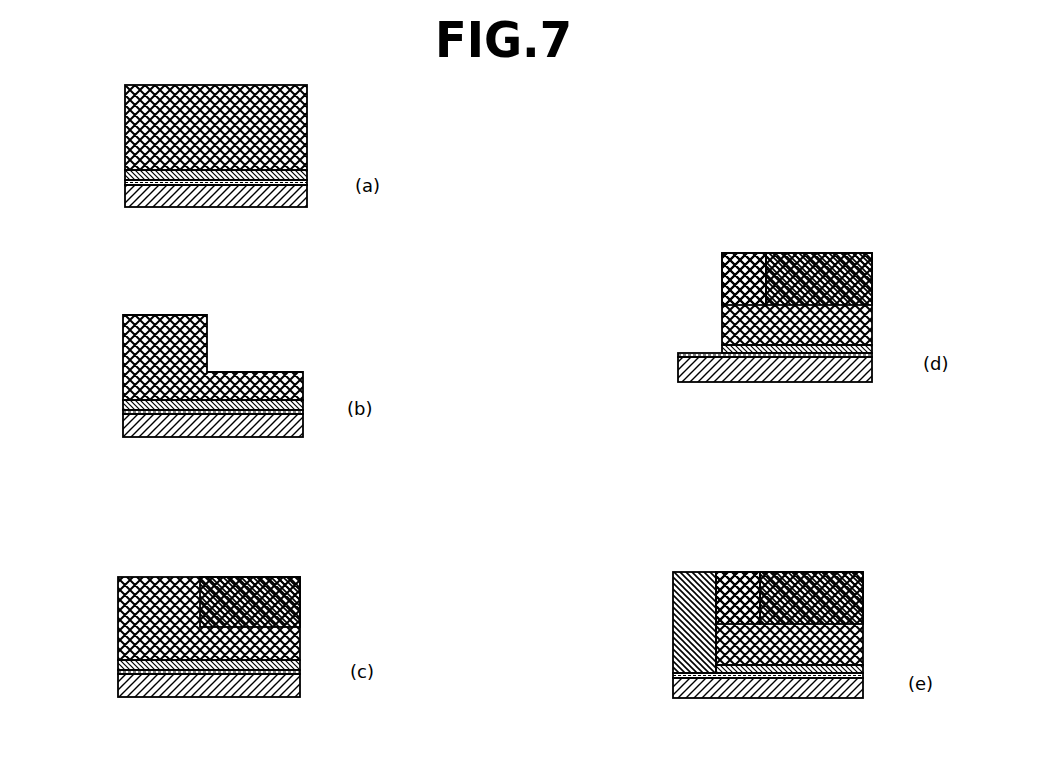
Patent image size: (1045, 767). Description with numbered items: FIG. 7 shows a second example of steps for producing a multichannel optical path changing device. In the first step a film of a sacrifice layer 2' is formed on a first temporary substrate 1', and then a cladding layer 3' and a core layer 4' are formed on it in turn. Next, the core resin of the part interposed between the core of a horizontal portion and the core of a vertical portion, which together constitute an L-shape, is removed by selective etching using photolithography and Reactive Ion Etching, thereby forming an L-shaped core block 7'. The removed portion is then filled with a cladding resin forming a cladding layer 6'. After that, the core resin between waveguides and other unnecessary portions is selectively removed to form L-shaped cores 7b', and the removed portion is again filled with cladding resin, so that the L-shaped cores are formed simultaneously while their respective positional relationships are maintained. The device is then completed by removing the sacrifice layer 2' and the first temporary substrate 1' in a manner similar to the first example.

The first temporary substrate 1' is at (177, 219).
The sacrifice layer 2' is at (169, 183).
The cladding layer 3' is at (175, 161).
The core layer 4' is at (184, 127).
The L-shaped core 7' is at (213, 331).
The cladding layer 6' is at (458, 586).
The L-shaped core 7b' is at (753, 408).